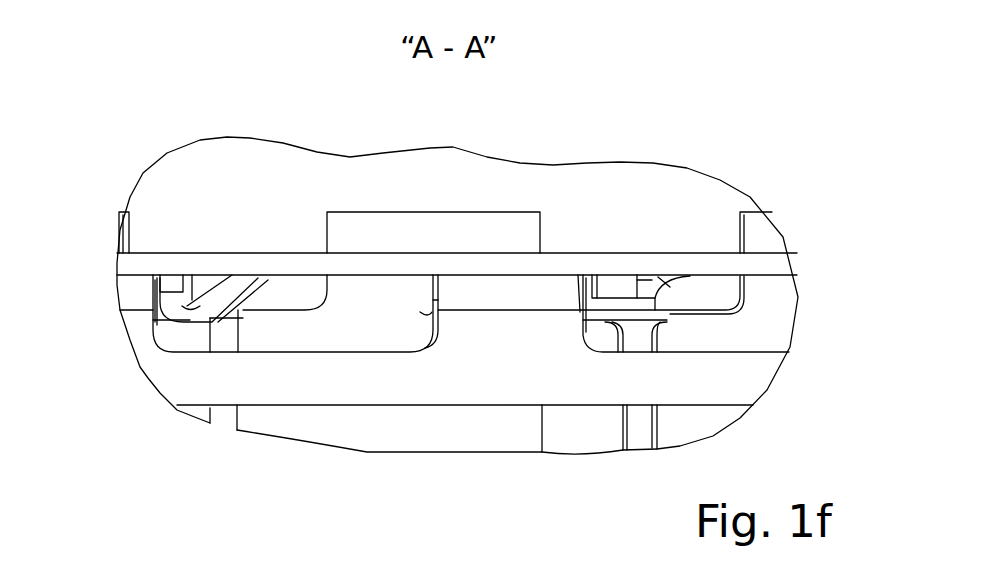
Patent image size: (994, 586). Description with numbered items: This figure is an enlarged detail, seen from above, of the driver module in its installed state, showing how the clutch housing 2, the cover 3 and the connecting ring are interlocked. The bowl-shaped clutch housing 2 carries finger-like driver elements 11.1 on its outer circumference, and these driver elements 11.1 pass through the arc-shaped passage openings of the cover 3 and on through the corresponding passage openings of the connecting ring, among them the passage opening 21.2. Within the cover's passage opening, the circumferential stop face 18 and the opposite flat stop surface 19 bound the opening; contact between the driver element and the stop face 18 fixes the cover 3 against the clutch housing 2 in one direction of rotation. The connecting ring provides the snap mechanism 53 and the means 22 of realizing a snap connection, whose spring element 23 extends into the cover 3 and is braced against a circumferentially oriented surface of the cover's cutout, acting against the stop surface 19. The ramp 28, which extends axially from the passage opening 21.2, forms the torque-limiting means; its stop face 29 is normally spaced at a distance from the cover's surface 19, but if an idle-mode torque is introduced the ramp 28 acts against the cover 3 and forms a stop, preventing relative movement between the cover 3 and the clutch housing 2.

The clutch housing 2 is at (322, 432).
The cover 3 is at (135, 264).
The driver element 11.1 is at (777, 327).
The stop face 18 is at (424, 316).
The stop surface 19 is at (157, 307).
The passage opening 21.2 is at (641, 337).
The means of realizing a snap connection 22 is at (227, 202).
The spring element 23 is at (190, 305).
The ramp 28 is at (630, 292).
The stop face 29 is at (595, 292).
The snap mechanism 53 is at (170, 268).